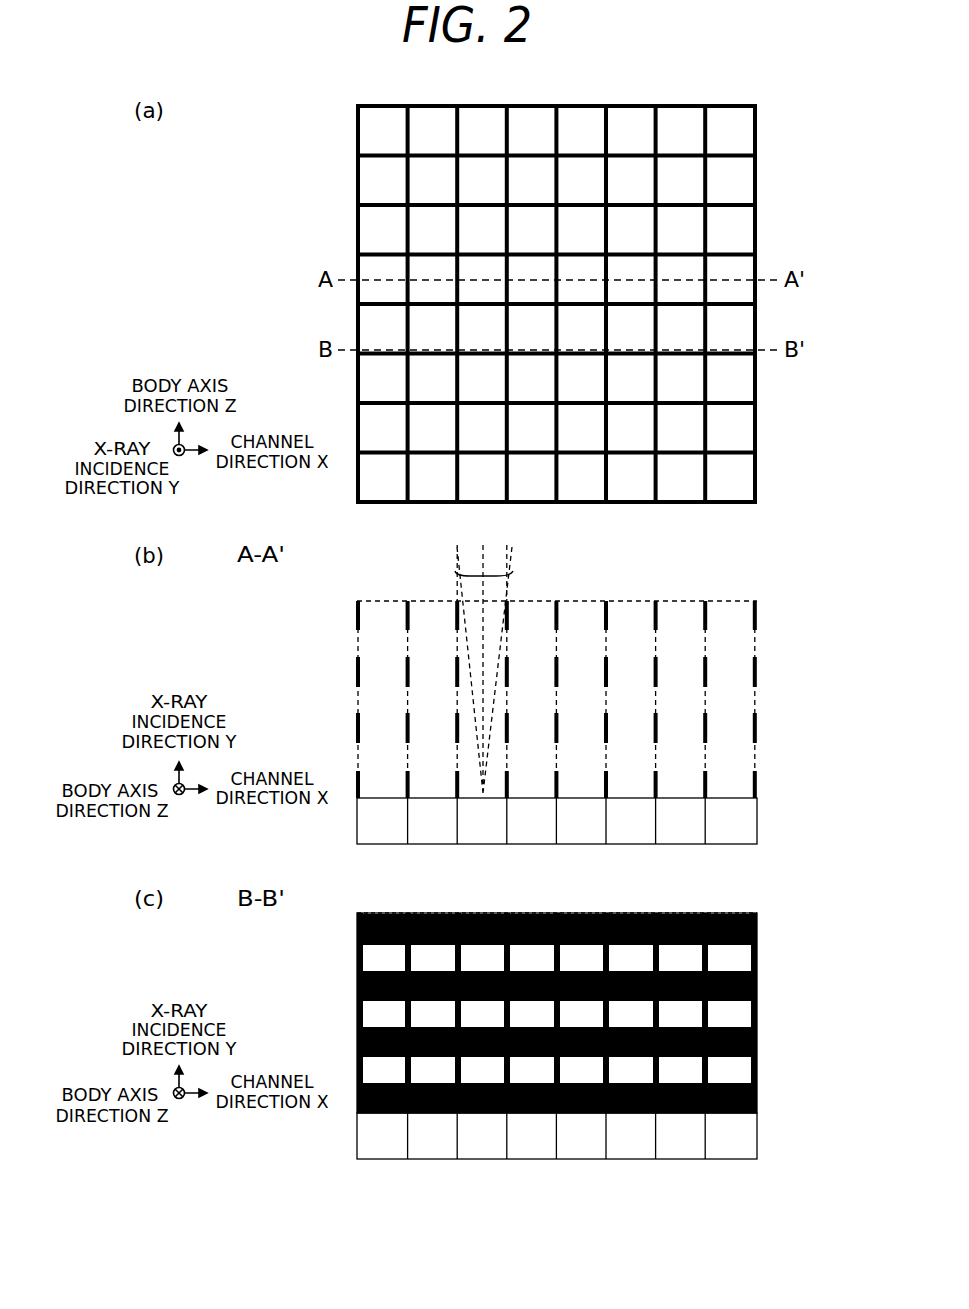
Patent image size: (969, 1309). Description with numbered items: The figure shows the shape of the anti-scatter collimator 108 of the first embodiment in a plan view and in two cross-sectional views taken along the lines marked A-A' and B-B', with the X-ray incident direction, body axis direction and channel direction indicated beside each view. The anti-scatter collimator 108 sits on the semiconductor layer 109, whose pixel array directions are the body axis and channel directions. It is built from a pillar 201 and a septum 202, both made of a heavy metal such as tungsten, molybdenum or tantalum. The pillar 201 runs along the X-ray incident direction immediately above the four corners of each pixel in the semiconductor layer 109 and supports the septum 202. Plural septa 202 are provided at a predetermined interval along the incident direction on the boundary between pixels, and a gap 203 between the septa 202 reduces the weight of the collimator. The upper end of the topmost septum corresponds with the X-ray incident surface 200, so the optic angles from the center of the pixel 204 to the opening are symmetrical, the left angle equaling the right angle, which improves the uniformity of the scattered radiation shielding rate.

The anti-scatter collimator 108 is at (757, 166).
The semiconductor layer 109 is at (757, 822).
The X-ray incident surface 200 is at (681, 601).
The pillar 201 is at (361, 913).
The septum 202 is at (557, 620).
The gap 203 is at (378, 957).
The center of the pixel 204 is at (478, 845).